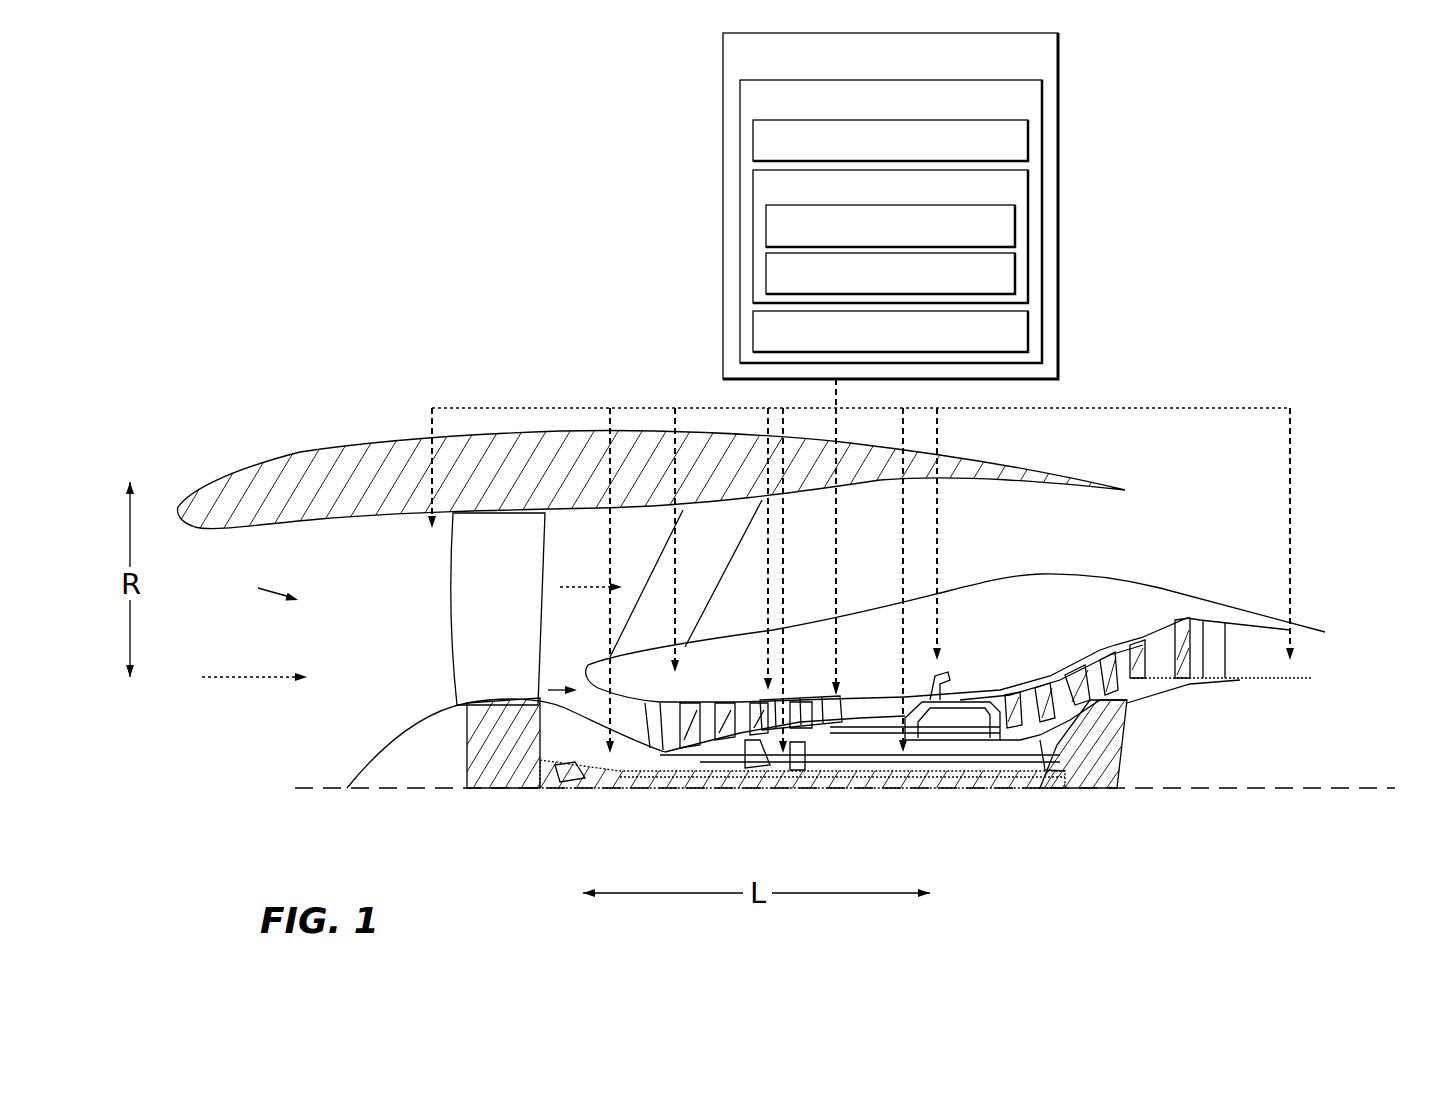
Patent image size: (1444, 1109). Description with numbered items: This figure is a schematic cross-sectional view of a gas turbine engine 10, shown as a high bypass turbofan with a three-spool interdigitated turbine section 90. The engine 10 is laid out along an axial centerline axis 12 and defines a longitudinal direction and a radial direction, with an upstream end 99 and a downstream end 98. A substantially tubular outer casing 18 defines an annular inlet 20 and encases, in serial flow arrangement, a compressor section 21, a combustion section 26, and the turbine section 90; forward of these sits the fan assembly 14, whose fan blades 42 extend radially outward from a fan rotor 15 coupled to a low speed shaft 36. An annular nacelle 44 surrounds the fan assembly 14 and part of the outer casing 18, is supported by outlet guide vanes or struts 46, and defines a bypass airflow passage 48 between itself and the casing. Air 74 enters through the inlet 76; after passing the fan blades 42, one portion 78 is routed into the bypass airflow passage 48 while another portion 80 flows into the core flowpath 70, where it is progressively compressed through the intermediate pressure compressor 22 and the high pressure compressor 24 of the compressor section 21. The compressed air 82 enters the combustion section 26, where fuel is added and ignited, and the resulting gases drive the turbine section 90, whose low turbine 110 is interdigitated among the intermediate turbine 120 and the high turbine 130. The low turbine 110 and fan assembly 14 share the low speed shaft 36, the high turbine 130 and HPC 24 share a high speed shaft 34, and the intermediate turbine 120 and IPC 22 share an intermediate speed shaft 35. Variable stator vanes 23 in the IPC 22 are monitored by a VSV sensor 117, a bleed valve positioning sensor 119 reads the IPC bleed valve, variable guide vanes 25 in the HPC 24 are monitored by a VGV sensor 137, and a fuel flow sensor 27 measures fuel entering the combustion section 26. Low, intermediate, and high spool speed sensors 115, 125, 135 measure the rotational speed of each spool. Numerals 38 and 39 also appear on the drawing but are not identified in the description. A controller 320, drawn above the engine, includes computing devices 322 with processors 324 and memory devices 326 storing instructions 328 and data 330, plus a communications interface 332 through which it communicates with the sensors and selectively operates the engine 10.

The gas turbine engine 10 is at (1216, 386).
The axial centerline axis 12 is at (1330, 790).
The fan assembly 14 is at (695, 546).
The fan rotor 15 is at (468, 737).
The outer casing 18 is at (853, 632).
The annular inlet 20 is at (577, 665).
The compressor section 21 is at (765, 674).
The intermediate pressure compressor 22 is at (682, 700).
The variable stator vanes 23 is at (648, 737).
The high pressure compressor 24 is at (843, 705).
The variable guide vanes 25 is at (820, 740).
The combustion section 26 is at (967, 665).
The fuel flow sensor 27 is at (932, 652).
The high speed shaft 34 is at (842, 770).
The intermediate speed shaft 35 is at (743, 767).
The low speed shaft 36 is at (567, 780).
The fan blade root 38 is at (428, 525).
The exhaust nozzle 39 is at (1292, 655).
The fan blades 42 is at (460, 567).
The nacelle 44 is at (408, 455).
The outlet guide vanes or struts 46 is at (714, 572).
The bypass airflow passage 48 is at (821, 572).
The core flowpath 70 is at (602, 705).
The air 74 is at (262, 677).
The inlet 76 is at (262, 584).
The bypass air 78 is at (575, 587).
The core air 80 is at (548, 700).
The compressed air 82 is at (823, 556).
The turbine section 90 is at (1137, 578).
The downstream end 98 is at (1439, 695).
The upstream end 99 is at (152, 765).
The low turbine 110 is at (1113, 750).
The low spool speed sensor 115 is at (598, 760).
The VSV sensor 117 is at (680, 662).
The bleed valve positioning sensor 119 is at (805, 680).
The intermediate turbine 120 is at (1052, 770).
The intermediate spool speed sensor 125 is at (776, 775).
The high turbine 130 is at (1003, 700).
The high spool speed sensor 135 is at (915, 770).
The VGV sensor 137 is at (848, 715).
The controller 320 is at (1058, 50).
The computing device(s) 322 is at (1042, 98).
The processor(s) 324 is at (1028, 142).
The memory device(s) 326 is at (1028, 185).
The instructions 328 is at (1015, 228).
The data 330 is at (1015, 275).
The communications interface 332 is at (1028, 335).